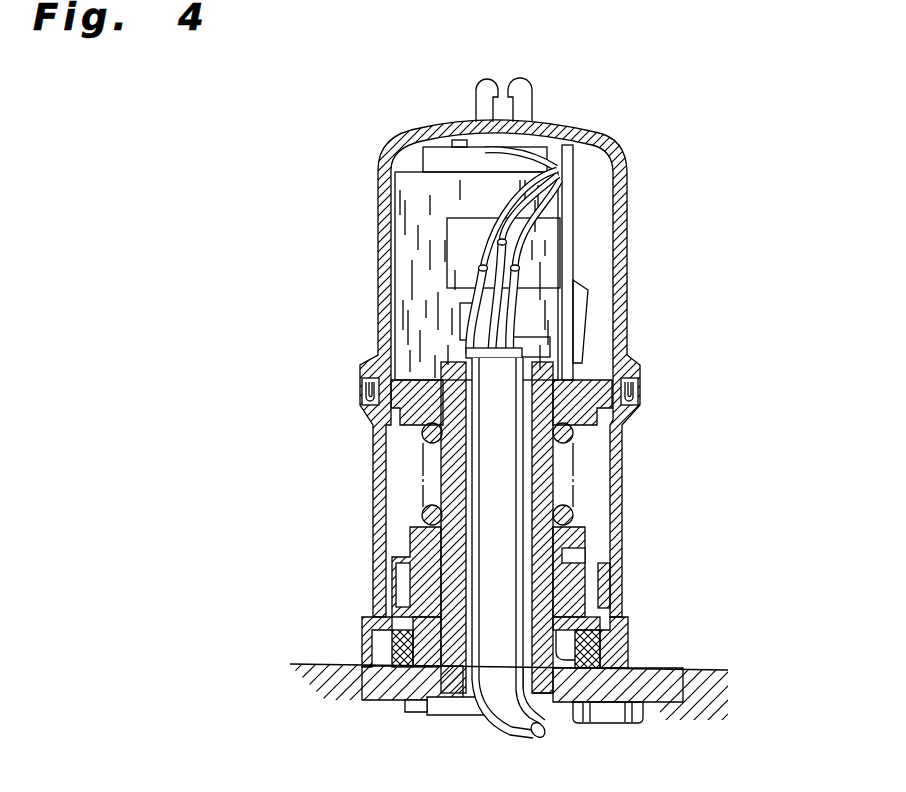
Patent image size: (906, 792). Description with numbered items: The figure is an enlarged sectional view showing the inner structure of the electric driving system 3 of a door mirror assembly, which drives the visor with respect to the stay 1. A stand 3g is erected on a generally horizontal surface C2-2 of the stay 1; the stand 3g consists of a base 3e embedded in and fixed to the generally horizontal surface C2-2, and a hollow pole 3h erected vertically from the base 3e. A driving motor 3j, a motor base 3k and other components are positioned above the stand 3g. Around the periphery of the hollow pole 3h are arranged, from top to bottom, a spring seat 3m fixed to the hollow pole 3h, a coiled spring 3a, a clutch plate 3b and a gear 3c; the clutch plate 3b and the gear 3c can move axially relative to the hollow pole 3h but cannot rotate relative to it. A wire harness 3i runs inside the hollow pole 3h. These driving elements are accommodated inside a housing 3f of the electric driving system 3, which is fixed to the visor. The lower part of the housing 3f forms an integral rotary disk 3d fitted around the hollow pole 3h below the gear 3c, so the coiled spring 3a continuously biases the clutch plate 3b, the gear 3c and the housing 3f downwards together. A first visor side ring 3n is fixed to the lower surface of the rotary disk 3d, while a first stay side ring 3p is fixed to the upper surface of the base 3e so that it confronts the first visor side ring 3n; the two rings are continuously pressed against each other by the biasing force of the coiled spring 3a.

The electric driving system 3 is at (524, 414).
The housing 3f is at (621, 247).
The driving motor 3j is at (408, 242).
The motor base 3k is at (412, 388).
The spring seat 3m is at (423, 437).
The coiled spring 3a is at (423, 453).
The hollow pole 3h is at (455, 482).
The rotary disk 3d is at (410, 598).
The first visor side ring 3n is at (362, 619).
The clutch plate 3b is at (585, 527).
The gear 3c is at (573, 572).
The stand 3g is at (657, 668).
The base 3e is at (670, 698).
The first stay side ring 3p is at (403, 667).
The wire harness 3i is at (512, 716).
The stay 1 is at (342, 715).
The generally horizontal surface C2-2 is at (322, 664).